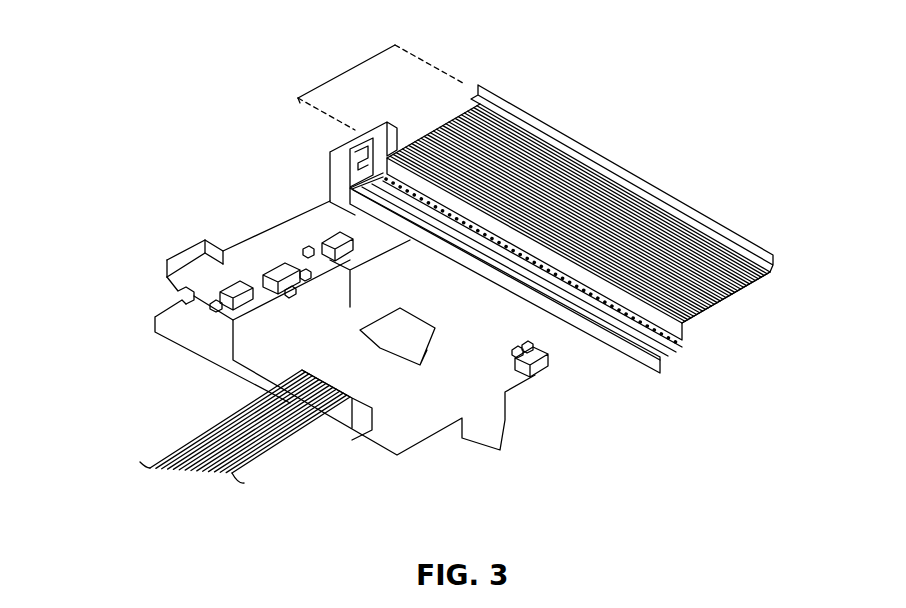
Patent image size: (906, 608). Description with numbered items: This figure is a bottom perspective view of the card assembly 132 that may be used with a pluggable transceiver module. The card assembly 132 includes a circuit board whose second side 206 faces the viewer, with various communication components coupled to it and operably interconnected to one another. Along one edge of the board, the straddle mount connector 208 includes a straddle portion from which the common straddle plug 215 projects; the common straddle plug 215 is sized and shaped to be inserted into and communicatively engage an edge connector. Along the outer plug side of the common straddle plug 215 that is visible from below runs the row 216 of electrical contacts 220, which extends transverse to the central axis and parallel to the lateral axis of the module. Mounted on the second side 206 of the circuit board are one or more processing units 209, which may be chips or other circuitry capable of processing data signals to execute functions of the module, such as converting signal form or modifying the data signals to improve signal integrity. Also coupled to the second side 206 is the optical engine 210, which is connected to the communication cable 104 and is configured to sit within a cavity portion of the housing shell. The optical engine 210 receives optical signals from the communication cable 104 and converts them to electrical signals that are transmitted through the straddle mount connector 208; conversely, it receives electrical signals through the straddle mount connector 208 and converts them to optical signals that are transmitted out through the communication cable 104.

The card assembly 132 is at (698, 70).
The communication cable 104 is at (258, 447).
The second side 206 is at (207, 340).
The straddle mount connector 208 is at (611, 148).
The processing units 209 is at (268, 272).
The optical engine 210 is at (388, 380).
The common straddle plug 215 is at (345, 70).
The row 216 is at (689, 309).
The electrical contacts 220 is at (728, 290).